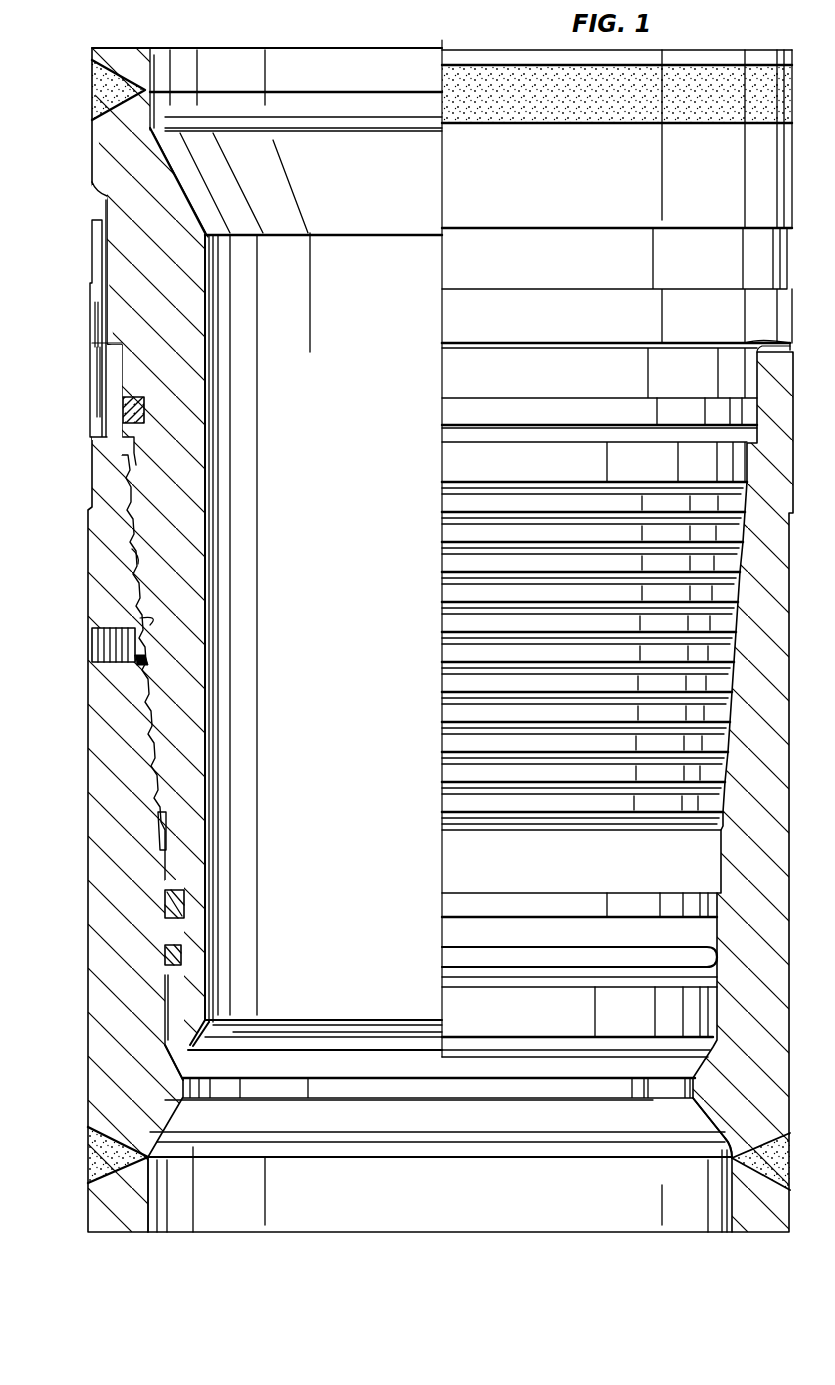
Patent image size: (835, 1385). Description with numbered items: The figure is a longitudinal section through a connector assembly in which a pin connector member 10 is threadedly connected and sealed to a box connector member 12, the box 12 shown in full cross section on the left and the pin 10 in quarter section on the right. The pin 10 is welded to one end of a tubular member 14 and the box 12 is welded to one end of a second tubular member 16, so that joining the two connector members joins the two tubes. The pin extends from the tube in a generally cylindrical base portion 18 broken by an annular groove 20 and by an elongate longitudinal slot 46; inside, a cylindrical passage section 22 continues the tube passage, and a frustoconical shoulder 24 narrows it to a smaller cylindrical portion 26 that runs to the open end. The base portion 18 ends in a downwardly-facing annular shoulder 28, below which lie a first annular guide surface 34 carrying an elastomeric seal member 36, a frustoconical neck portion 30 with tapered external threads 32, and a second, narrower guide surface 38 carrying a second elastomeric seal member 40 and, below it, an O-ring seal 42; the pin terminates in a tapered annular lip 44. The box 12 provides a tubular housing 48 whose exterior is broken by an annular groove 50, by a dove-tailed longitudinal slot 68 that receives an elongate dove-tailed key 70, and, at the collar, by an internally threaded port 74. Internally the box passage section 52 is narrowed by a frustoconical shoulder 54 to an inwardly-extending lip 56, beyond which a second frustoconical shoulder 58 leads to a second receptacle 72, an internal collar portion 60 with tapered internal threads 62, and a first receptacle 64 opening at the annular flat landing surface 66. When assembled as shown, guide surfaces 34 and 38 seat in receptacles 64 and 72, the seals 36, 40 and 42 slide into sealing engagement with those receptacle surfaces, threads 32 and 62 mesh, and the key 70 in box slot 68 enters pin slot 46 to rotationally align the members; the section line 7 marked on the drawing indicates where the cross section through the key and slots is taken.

The section line 7- 7 is at (43, 313).
The pin connector member 10 is at (63, 131).
The box connector member 12 is at (74, 1023).
The tubular member 14 is at (96, 62).
The second tubular member 16 is at (95, 1205).
The base portion 18 is at (92, 160).
The annular groove 20 is at (96, 280).
The cylindrical passage section 22 is at (146, 97).
The frustoconical shoulder 24 is at (170, 162).
The cylindrical portion 26 is at (212, 268).
The downwardly-facing shoulder 28 is at (118, 345).
The neck portion 30 is at (155, 618).
The external threads 32 is at (140, 553).
The annular guide surface 34 is at (500, 372).
The elastomeric seal member 36 is at (145, 410).
The second external annular guide surface 38 is at (480, 860).
The second elastomeric seal member 40 is at (182, 902).
The O-ring seal 42 is at (184, 955).
The tapered annular lip 44 is at (180, 1045).
The slot 46 is at (104, 206).
The tubular housing 48 is at (88, 910).
The annular groove 50 is at (90, 560).
The cylindrical passage section 52 is at (728, 1203).
The frustoconical shoulder 54 is at (700, 1113).
The inwardly-extending lip 56 is at (498, 1090).
The second frustoconical shoulder 58 is at (700, 1068).
The internal collar portion 60 is at (145, 745).
The internal threads 62 is at (130, 600).
The receptacle 64 is at (130, 447).
The annular flat landing surface 66 is at (745, 345).
The slot 68 is at (105, 417).
The key 70 is at (95, 378).
The second receptacle 72 is at (165, 995).
The port 74 is at (148, 662).